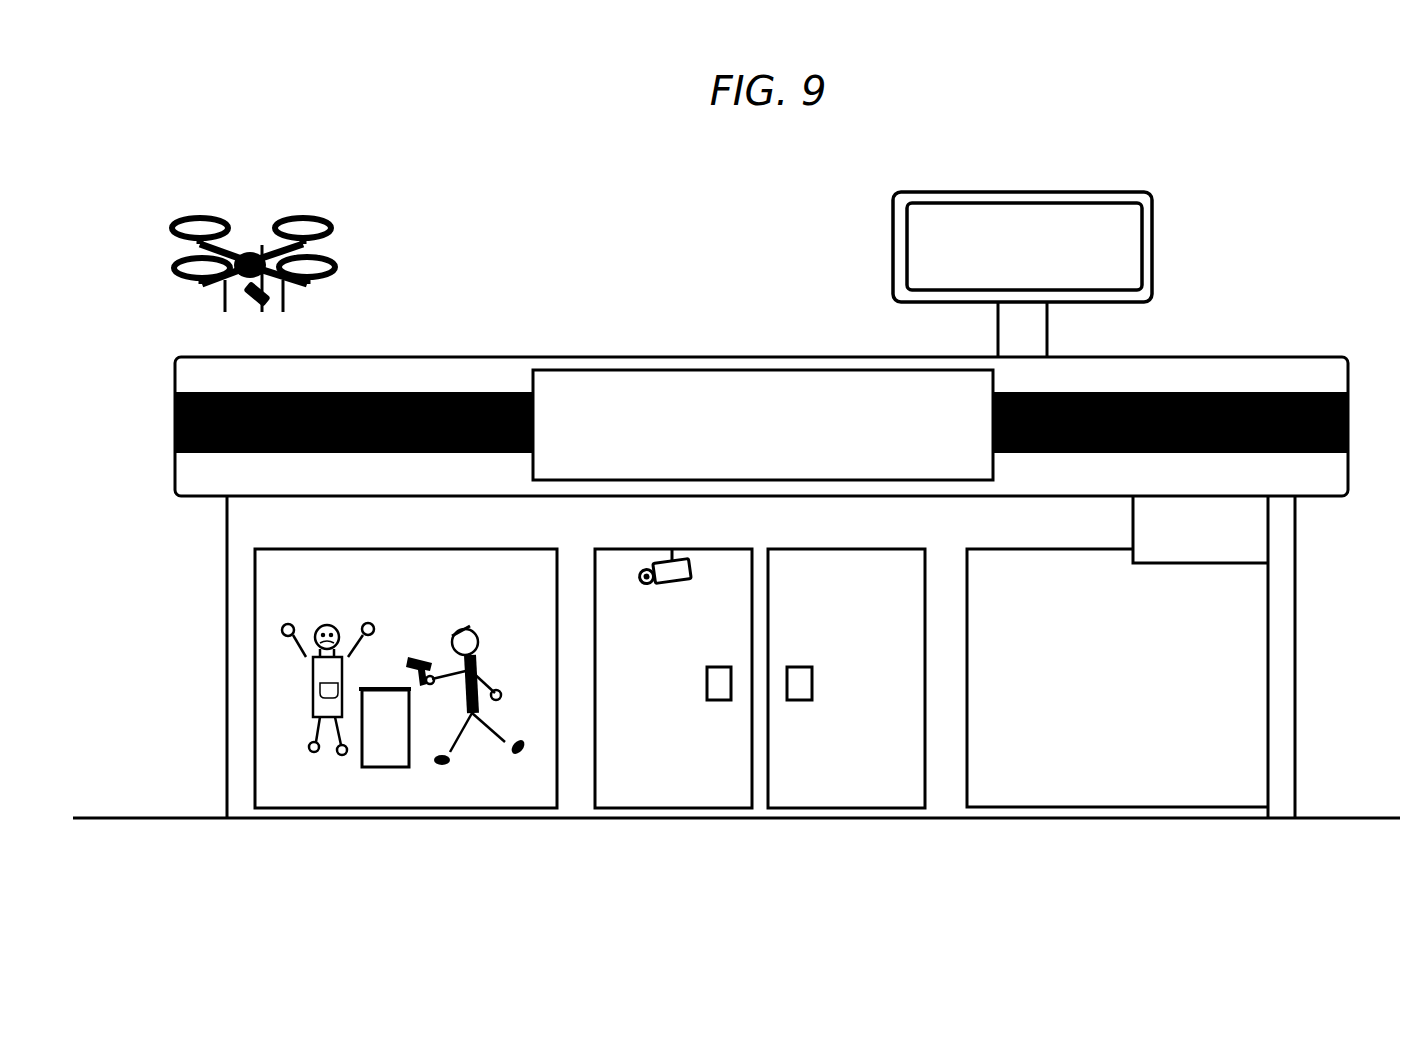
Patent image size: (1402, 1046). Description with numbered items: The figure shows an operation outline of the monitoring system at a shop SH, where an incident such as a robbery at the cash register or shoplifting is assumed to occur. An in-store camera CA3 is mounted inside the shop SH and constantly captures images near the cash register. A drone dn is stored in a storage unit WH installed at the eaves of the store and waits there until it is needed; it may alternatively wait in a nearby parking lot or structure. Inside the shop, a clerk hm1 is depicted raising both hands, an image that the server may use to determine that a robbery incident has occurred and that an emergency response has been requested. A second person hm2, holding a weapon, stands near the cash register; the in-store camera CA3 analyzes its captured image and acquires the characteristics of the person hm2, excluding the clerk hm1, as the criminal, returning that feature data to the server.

The drone dn is at (335, 275).
The shop SH is at (1252, 357).
The storage unit WH is at (1245, 532).
The clerk hm1 is at (323, 626).
The person hm2 is at (487, 665).
The in-store camera CA3 is at (677, 583).